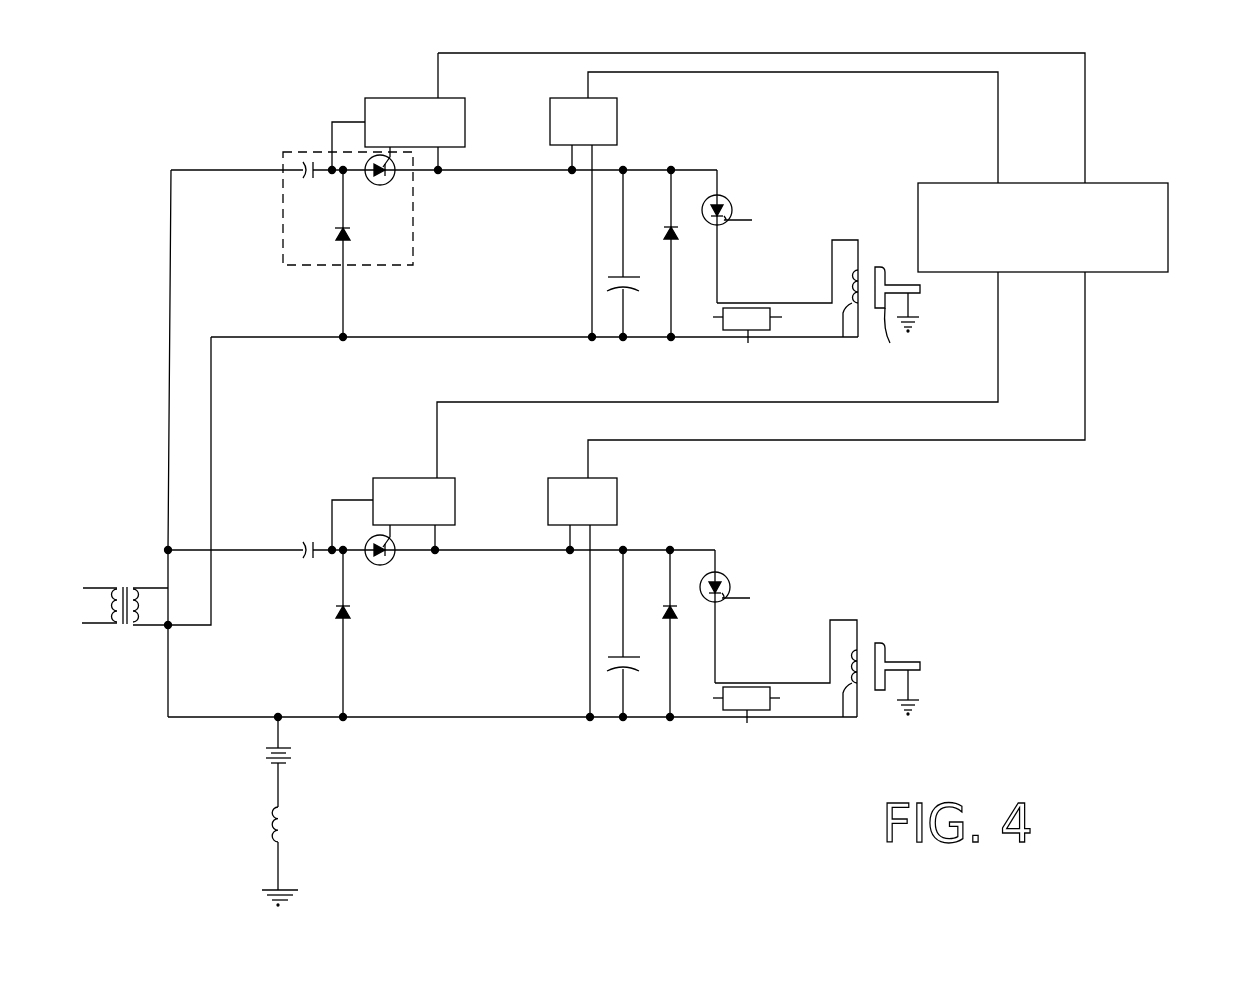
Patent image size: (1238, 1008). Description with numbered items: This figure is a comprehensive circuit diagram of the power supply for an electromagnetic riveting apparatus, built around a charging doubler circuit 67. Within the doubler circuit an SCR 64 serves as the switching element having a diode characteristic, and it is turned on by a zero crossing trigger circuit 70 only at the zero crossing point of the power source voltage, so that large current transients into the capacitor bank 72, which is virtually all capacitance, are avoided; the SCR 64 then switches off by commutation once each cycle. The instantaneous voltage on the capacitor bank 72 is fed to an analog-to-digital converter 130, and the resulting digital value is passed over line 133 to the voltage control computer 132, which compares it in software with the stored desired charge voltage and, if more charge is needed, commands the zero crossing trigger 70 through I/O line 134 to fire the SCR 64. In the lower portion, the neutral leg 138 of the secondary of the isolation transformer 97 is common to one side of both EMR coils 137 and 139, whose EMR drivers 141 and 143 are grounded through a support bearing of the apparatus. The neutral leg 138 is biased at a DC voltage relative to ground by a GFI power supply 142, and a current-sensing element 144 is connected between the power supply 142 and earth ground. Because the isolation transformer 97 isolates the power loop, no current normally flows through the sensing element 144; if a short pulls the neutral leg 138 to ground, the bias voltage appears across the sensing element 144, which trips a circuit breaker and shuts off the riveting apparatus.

The zero crossing trigger circuit 70 is at (410, 98).
The SCR 64 is at (394, 178).
The charging doubler circuit 67 is at (413, 238).
The analog-to-digital converter 130 is at (617, 123).
The line 133 is at (820, 72).
The I/O line 134 is at (763, 53).
The voltage control computer 132 is at (1168, 252).
The capacitor bank 72 is at (627, 277).
The EMR coil 137 is at (836, 321).
The EMR driver 141 is at (899, 319).
The neutral leg 138 is at (200, 627).
The isolation transformer 97 is at (124, 585).
The GFI power supply 142 is at (293, 755).
The current-sensing element 144 is at (280, 832).
The EMR driver 143 is at (902, 663).
The EMR coil 139 is at (845, 719).